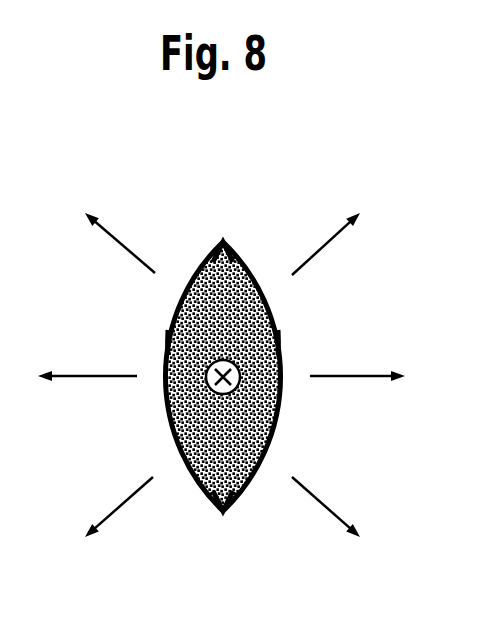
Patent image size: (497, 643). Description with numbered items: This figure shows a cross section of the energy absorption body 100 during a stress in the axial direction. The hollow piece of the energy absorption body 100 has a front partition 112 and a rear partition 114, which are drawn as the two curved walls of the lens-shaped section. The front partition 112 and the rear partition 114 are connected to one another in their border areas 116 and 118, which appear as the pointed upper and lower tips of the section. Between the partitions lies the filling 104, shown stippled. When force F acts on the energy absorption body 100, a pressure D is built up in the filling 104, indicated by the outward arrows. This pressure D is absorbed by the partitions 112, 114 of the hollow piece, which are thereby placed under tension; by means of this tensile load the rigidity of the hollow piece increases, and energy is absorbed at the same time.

The energy absorption body 100 is at (276, 213).
The filling 104 is at (244, 422).
The front partition 112 is at (278, 342).
The rear partition 114 is at (168, 340).
The border area 116 is at (223, 242).
The border area 118 is at (223, 511).
The force F is at (207, 379).
The pressure D is at (122, 248).